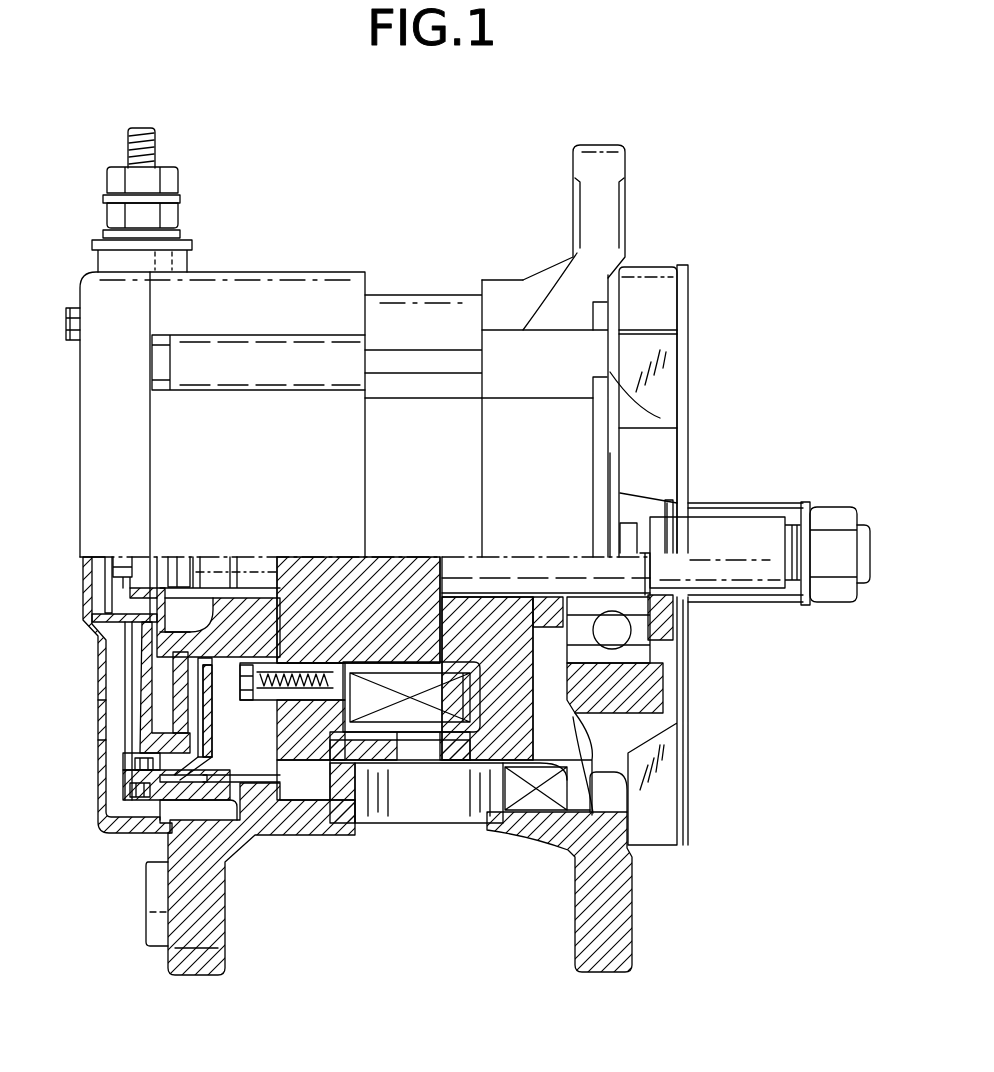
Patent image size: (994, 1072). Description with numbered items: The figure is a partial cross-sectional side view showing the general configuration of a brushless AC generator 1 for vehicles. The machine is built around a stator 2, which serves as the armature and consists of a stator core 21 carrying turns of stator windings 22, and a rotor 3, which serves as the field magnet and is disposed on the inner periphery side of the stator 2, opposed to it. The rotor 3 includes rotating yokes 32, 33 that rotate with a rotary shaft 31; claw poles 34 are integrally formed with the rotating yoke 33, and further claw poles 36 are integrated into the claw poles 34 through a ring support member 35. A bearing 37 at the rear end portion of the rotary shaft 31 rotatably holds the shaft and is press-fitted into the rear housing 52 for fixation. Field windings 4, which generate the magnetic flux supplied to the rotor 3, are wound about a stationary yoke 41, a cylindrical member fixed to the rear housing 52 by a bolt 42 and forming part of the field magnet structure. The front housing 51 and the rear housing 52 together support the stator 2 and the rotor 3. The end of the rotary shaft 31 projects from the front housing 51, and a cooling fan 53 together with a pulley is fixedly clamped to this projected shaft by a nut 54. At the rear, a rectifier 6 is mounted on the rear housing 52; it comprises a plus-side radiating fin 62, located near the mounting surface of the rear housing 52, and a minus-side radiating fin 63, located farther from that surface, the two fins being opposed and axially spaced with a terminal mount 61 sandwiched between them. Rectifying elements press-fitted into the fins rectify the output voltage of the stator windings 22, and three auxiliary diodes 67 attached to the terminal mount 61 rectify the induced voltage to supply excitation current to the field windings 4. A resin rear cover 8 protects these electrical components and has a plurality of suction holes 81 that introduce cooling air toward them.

The brushless AC generator 1 is at (703, 180).
The stator 2 is at (448, 844).
The stator core 21 is at (374, 805).
The stator windings 22 is at (526, 814).
The rotor 3 is at (556, 735).
The rotary shaft 31 is at (672, 602).
The rotating yoke 32 is at (346, 555).
The rotating yoke 33 is at (540, 693).
The claw poles 34 is at (538, 800).
The ring support member 35 is at (407, 740).
The claw poles 36 is at (347, 775).
The bearing 37 is at (200, 598).
The field windings 4 is at (446, 704).
The stationary yoke 41 is at (296, 738).
The bolt 42 is at (305, 670).
The front housing 51 is at (612, 228).
The rear housing 52 is at (264, 824).
The cooling fan 53 is at (684, 804).
The nut 54 is at (833, 516).
The rectifier 6 is at (128, 721).
The terminal mount 61 is at (147, 764).
The plus-side radiating fin 62 is at (180, 665).
The minus-side radiating fin 63 is at (181, 685).
The auxiliary diodes 67 is at (118, 567).
The rear cover 8 is at (108, 834).
The suction holes 81 is at (97, 703).